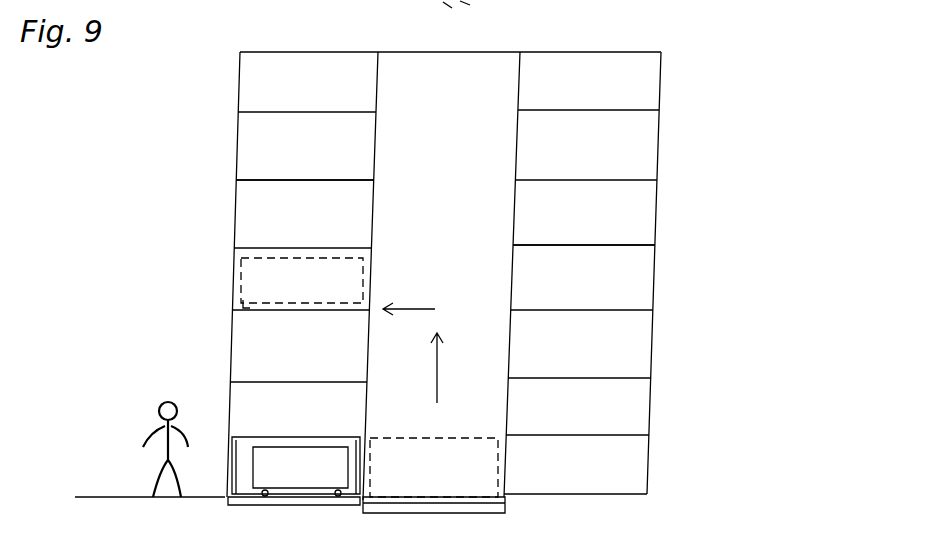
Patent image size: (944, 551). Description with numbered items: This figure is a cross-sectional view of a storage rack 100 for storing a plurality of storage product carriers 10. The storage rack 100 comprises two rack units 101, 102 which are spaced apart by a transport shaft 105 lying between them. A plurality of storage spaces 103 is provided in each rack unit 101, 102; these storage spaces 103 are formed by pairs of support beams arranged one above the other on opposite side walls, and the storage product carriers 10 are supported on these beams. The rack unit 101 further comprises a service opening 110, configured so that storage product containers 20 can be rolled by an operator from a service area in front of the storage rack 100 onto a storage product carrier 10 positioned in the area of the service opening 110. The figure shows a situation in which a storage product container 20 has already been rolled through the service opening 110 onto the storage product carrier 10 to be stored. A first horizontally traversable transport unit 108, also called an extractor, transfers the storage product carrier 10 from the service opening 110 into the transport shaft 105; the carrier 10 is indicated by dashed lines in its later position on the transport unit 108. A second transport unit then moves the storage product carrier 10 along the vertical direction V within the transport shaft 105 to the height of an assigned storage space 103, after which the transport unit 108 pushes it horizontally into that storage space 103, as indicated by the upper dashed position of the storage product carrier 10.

The storage rack 100 is at (735, 57).
The rack unit 101 is at (295, 49).
The rack unit 102 is at (623, 50).
The storage space 103 is at (245, 164).
The transport shaft 105 is at (492, 69).
The first transport unit 108 is at (505, 509).
The service opening 110 is at (226, 409).
The storage product carrier 10 is at (239, 302).
The storage product container 20 is at (285, 446).